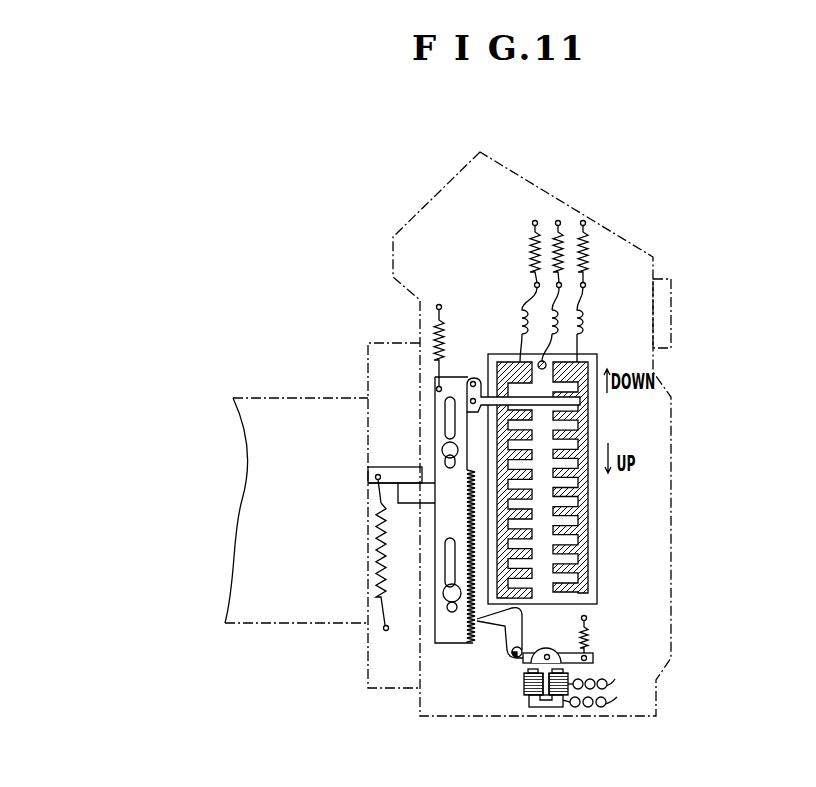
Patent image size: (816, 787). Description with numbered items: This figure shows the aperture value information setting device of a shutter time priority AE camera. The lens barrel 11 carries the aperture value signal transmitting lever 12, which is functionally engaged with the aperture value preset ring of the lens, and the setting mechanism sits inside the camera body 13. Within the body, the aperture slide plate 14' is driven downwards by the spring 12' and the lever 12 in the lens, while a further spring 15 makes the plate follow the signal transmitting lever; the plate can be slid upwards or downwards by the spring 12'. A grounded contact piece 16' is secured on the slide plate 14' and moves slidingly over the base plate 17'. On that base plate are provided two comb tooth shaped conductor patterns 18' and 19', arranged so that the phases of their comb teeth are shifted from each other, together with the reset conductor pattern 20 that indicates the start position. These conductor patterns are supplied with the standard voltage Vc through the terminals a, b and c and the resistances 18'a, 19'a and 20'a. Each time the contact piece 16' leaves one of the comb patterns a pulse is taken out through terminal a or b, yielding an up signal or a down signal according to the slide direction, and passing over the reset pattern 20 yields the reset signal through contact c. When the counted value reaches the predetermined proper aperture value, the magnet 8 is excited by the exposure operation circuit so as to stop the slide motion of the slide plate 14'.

The magnet 8 is at (552, 708).
The lens barrel 11 is at (312, 612).
The aperture value signal transmitting lever 12 is at (401, 462).
The spring 12' is at (397, 553).
The camera body 13 is at (662, 482).
The aperture slide plate 14' is at (455, 535).
The spring 15 is at (443, 338).
The contact piece 16' is at (523, 367).
The base plate 17' is at (562, 479).
The comb tooth shaped conductor pattern 18' is at (593, 477).
The resistance 18'a is at (595, 285).
The comb tooth shaped conductor pattern 19' is at (485, 480).
The resistance 19'a is at (508, 285).
The reset conductor pattern 20 is at (575, 328).
The resistance 20'a is at (527, 252).